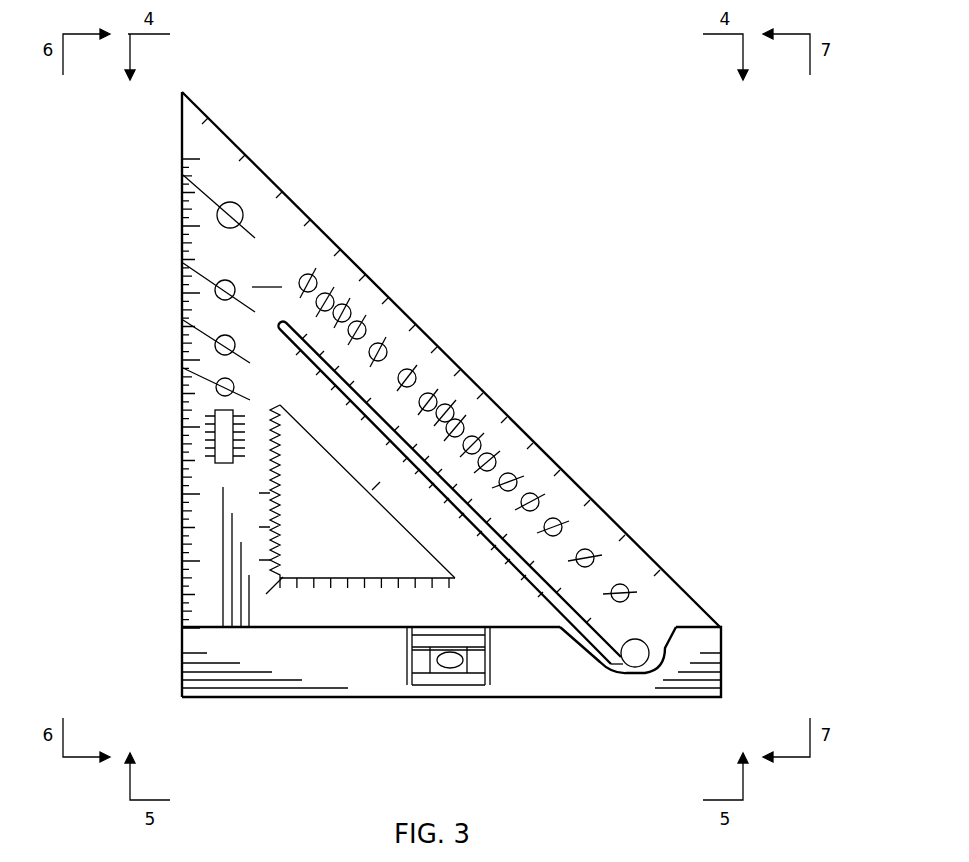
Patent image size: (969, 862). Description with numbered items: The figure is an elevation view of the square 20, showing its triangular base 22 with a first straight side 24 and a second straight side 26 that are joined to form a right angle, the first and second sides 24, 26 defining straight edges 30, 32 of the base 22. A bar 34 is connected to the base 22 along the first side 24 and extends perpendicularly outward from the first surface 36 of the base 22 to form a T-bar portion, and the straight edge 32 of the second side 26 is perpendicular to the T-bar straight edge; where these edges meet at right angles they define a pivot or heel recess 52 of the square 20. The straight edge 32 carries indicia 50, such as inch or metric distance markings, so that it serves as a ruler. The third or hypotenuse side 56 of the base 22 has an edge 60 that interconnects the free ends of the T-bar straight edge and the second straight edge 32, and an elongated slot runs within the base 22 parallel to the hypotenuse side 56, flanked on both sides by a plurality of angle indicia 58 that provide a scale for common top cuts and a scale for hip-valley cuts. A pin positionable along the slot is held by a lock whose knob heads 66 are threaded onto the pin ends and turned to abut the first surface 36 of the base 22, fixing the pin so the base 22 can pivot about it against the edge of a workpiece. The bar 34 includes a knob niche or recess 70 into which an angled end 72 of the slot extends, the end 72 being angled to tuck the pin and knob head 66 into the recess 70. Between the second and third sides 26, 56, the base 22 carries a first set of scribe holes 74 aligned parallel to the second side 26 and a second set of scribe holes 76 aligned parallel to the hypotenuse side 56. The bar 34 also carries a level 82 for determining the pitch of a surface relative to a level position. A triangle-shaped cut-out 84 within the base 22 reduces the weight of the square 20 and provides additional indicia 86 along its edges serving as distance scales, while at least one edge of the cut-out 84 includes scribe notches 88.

The square 20 is at (499, 300).
The triangular base 22 is at (182, 597).
The first straight side 24 is at (390, 720).
The second straight side 26 is at (182, 321).
The straight edge 30 is at (287, 626).
The straight edge 32 is at (182, 426).
The bar 34 is at (560, 696).
The first surface 36 is at (267, 277).
The indicia 50 is at (197, 243).
The pivot or heel recess 52 is at (185, 626).
The hypotenuse side 56 is at (526, 436).
The angle indicia 58 is at (298, 366).
The edge 60 is at (455, 365).
The knob head 66 is at (640, 648).
The knob niche or recess 70 is at (627, 673).
The angled end 72 is at (612, 663).
The first set of scribe holes 74 is at (240, 205).
The second set of scribe holes 76 is at (591, 551).
The level 82 is at (452, 675).
The triangle-shaped cut-out 84 is at (343, 578).
The additional indicia 86 is at (456, 586).
The scribe notches 88 is at (287, 483).